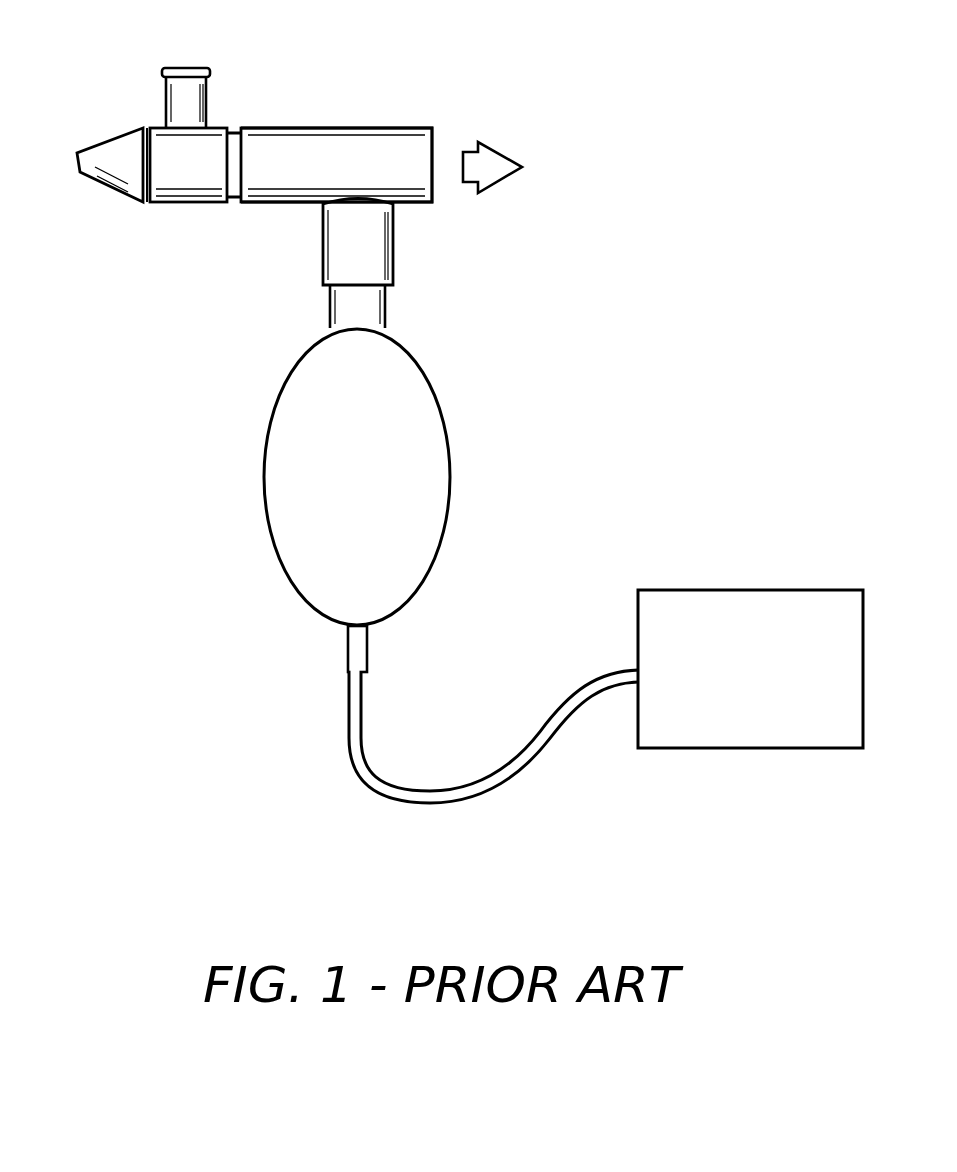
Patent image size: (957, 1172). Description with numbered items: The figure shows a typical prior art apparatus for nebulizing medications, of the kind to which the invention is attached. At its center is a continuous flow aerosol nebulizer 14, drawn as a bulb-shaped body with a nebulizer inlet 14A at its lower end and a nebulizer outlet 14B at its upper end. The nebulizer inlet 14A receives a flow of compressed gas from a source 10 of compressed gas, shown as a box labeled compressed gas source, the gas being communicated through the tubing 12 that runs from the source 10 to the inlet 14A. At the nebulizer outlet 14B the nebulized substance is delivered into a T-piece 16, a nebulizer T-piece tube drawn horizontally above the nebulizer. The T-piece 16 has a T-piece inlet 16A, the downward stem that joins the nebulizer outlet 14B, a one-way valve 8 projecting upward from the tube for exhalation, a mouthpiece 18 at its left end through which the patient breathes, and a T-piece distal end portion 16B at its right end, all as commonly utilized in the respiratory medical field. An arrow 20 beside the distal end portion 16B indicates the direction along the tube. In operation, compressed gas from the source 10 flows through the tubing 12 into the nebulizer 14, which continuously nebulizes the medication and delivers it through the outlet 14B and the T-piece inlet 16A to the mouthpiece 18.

The one-way valve 8 is at (185, 68).
The source of compressed gas 10 is at (740, 590).
The tubing 12 is at (348, 745).
The continuous flow aerosol nebulizer 14 is at (268, 418).
The nebulizer inlet 14A is at (346, 645).
The nebulizer outlet 14B is at (375, 316).
The T-piece 16 is at (360, 128).
The T-piece inlet 16A is at (338, 272).
The T-piece distal end portion 16B is at (415, 178).
The mouthpiece 18 is at (108, 147).
The flow direction arrow 20 is at (432, 140).